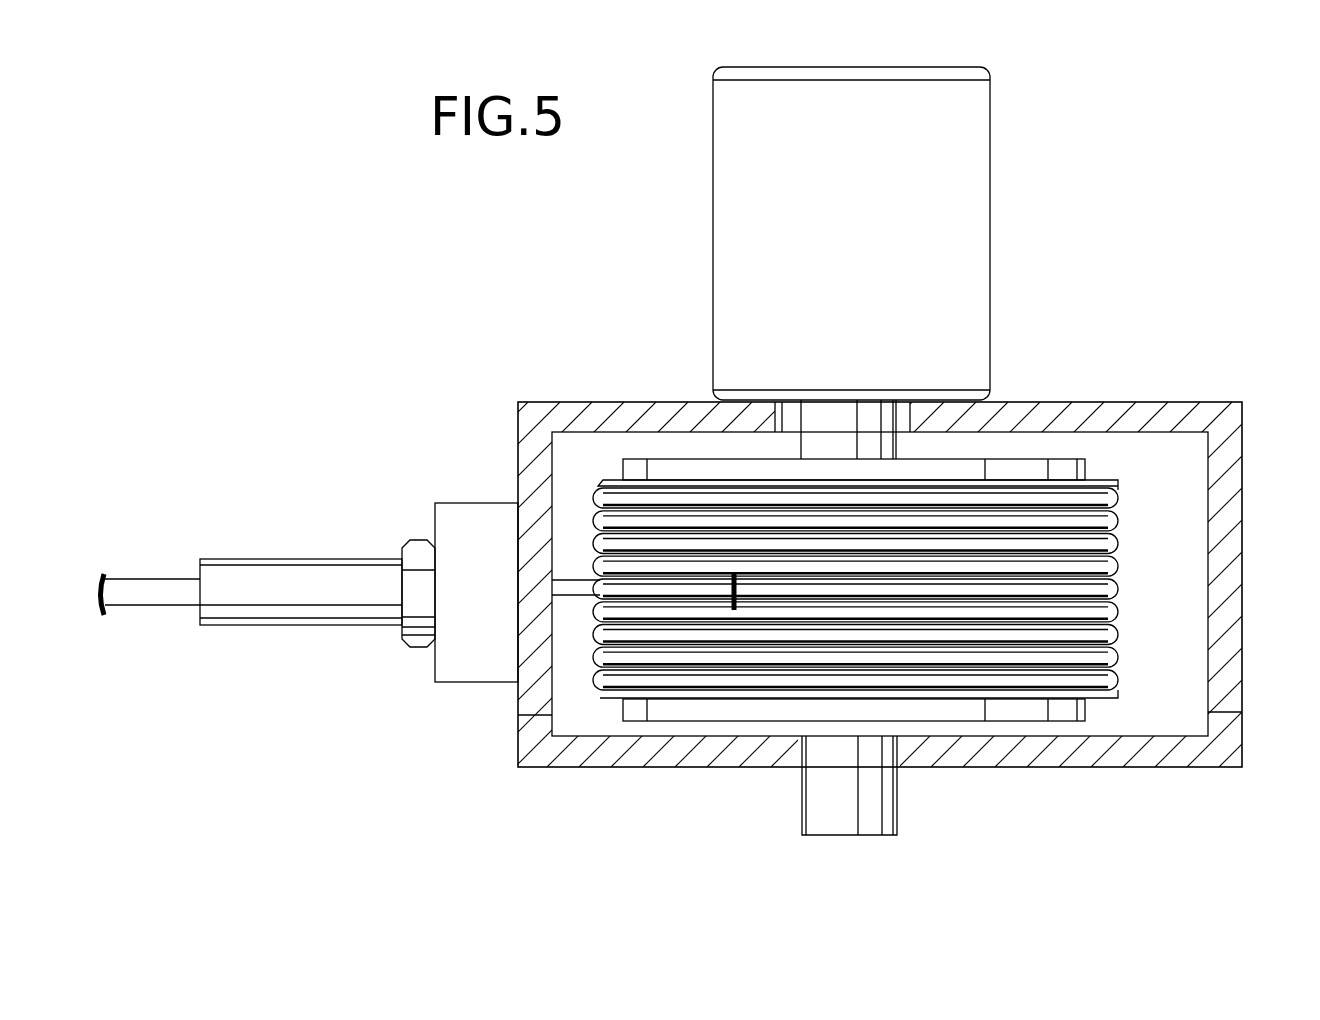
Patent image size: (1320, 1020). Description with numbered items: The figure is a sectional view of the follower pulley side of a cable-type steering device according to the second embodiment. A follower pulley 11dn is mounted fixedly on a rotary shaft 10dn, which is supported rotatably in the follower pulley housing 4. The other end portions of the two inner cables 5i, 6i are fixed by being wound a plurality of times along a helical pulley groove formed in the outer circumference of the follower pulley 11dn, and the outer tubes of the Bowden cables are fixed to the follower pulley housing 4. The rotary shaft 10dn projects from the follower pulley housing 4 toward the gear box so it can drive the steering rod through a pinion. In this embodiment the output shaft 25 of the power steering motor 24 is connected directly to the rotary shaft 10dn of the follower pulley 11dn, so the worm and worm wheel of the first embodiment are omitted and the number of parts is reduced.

The follower pulley housing 4 is at (1168, 416).
The power steering motor 24 is at (952, 192).
The output shaft 25 is at (833, 420).
The rotary shaft 10dn is at (865, 797).
The follower pulley 11dn is at (1022, 470).
The inner cable 5i is at (1105, 516).
The inner cable 6i is at (1105, 655).